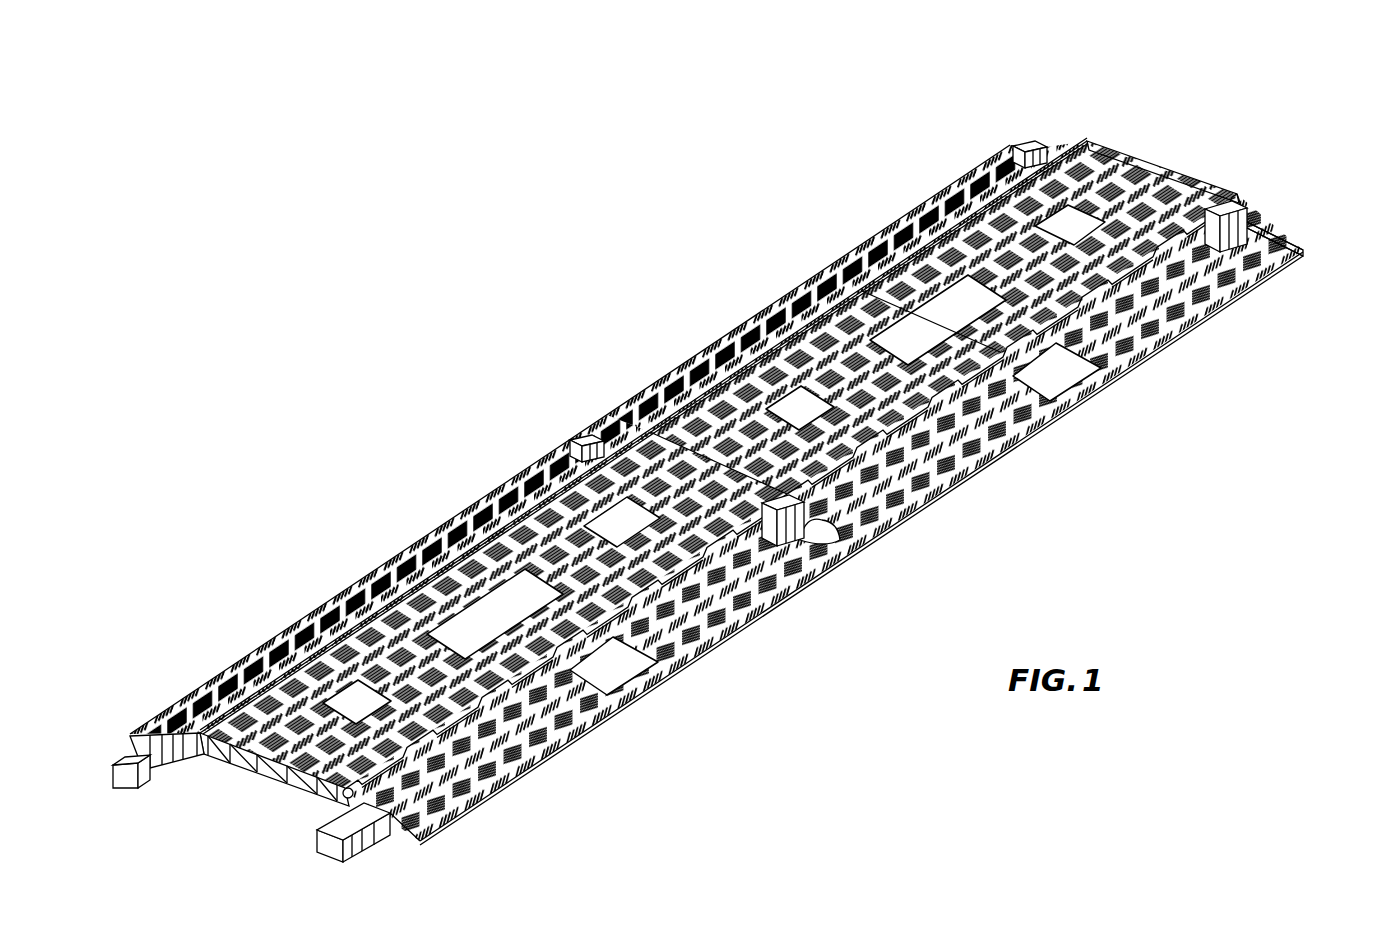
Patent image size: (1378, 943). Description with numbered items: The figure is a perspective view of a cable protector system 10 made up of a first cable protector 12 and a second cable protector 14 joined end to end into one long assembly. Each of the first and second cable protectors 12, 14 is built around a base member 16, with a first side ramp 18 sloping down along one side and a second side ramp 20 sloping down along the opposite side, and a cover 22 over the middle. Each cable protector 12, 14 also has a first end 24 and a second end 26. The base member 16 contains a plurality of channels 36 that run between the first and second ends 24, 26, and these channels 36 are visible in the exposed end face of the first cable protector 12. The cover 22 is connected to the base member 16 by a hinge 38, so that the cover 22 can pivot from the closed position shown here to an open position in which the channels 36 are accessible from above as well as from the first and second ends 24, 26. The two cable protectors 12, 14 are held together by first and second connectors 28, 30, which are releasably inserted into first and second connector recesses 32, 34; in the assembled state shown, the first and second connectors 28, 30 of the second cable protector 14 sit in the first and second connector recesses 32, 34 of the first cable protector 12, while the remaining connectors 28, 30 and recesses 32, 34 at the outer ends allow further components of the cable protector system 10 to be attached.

The cable protector system 10 is at (727, 510).
The first cable protector 12 is at (276, 634).
The second cable protector 14 is at (893, 226).
The base member 16 is at (241, 788).
The first side ramp 18 is at (735, 332).
The second side ramp 20 is at (540, 778).
The cover 22 is at (1173, 180).
The first end 24 is at (450, 846).
The second end 26 is at (1298, 255).
The first connector 28 is at (116, 759).
The second connector 30 is at (343, 863).
The first connector recess 32 is at (1048, 147).
The second connector recess 34 is at (1256, 217).
The channels 36 is at (235, 790).
The hinge 38 is at (878, 303).